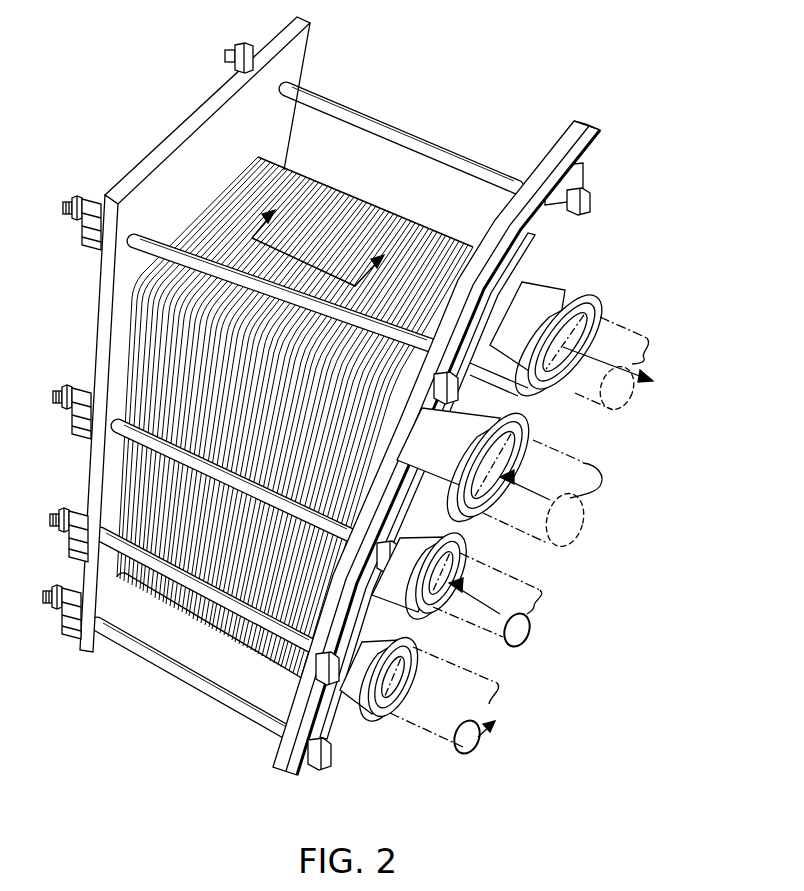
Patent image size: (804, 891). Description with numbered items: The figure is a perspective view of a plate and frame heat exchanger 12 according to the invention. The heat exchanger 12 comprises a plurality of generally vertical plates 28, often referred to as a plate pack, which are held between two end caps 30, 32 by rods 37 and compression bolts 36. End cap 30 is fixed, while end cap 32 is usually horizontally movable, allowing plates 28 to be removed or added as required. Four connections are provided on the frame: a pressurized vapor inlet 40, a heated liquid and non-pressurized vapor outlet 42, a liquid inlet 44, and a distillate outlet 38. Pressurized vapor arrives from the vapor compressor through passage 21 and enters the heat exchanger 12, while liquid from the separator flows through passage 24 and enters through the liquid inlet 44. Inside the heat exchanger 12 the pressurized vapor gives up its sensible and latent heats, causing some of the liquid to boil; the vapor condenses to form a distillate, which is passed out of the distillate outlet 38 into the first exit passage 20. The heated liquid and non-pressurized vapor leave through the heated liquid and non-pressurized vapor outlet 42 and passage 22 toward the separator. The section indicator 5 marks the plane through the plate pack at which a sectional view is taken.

The heat exchanger 12 is at (610, 192).
The first exit passage 20 is at (418, 742).
The passage 21 is at (596, 459).
The passage 22 is at (614, 320).
The passage 24 is at (513, 576).
The plates 28 is at (420, 217).
The end cap 30 is at (508, 231).
The end cap 32 is at (182, 134).
The compression bolts 36 is at (70, 235).
The rods 37 is at (452, 144).
The distillate outlet 38 is at (372, 699).
The pressurized vapor inlet 40 is at (506, 410).
The heated liquid and non-pressurized vapor outlet 42 is at (572, 294).
The liquid inlet 44 is at (460, 541).
The section line 5- 5 is at (323, 234).